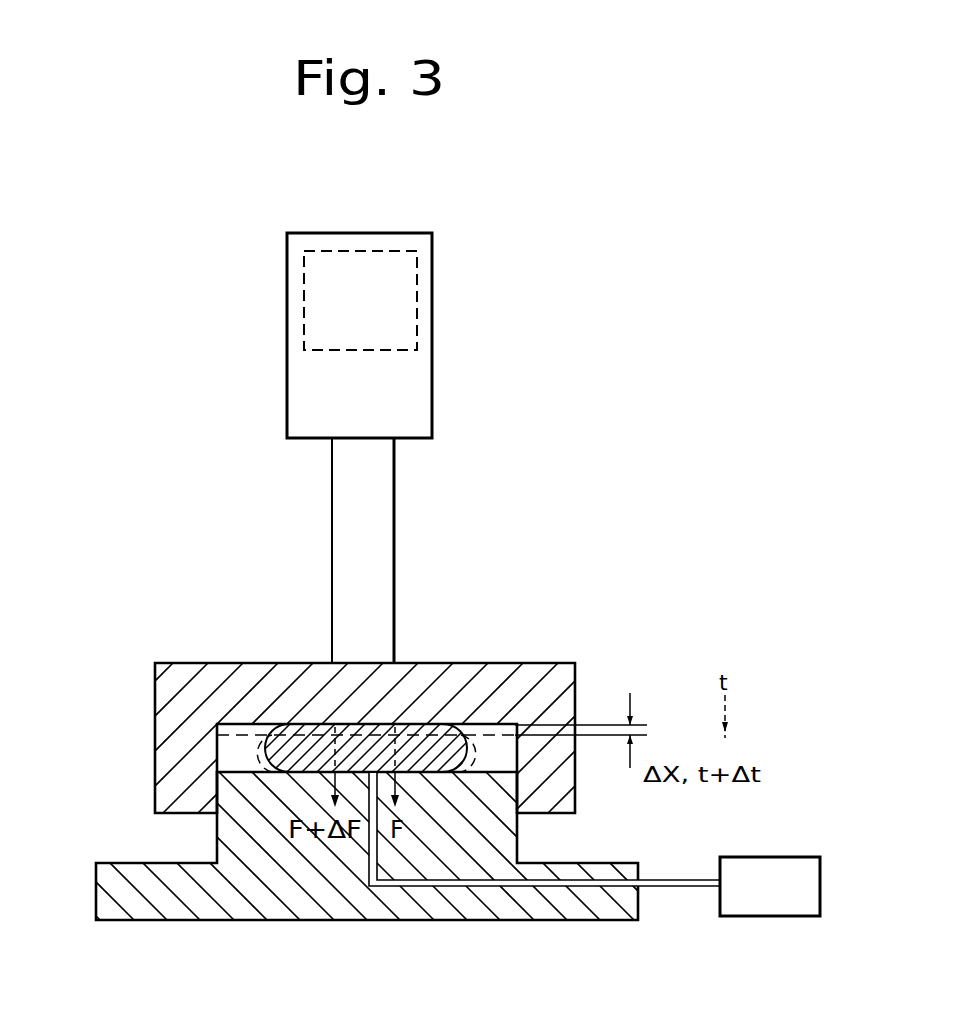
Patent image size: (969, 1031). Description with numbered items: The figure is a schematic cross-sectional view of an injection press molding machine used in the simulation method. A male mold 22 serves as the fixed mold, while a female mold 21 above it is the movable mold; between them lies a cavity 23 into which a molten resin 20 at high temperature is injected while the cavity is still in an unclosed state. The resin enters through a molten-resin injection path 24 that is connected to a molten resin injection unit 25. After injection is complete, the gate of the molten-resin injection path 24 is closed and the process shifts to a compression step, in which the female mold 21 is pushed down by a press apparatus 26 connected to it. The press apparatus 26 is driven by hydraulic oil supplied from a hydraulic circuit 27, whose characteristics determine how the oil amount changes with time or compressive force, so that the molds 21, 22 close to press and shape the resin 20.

The molten resin 20 is at (437, 745).
The female mold 21 is at (250, 663).
The male mold 22 is at (410, 915).
The cavity 23 is at (500, 740).
The molten-resin injection path 24 is at (368, 842).
The molten resin injection unit 25 is at (768, 918).
The press apparatus 26 is at (433, 402).
The hydraulic circuit 27 is at (418, 300).